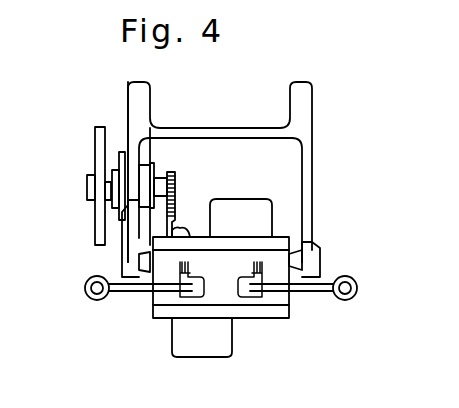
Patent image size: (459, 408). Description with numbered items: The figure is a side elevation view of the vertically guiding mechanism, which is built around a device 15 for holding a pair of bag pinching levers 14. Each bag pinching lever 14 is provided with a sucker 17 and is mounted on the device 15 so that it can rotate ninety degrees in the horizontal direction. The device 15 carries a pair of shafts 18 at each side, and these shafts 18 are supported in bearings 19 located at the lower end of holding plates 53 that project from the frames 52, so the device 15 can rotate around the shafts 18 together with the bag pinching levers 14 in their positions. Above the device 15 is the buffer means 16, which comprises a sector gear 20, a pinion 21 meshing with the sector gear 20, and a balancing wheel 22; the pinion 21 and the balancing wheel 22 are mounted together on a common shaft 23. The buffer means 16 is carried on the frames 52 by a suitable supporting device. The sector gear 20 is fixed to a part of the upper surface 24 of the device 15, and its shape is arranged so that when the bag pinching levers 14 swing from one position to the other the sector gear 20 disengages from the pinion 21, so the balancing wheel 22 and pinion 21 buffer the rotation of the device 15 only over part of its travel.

The bag pinching lever 14 is at (134, 296).
The device for holding the bag pinching levers 15 is at (232, 305).
The buffer means 16 is at (114, 138).
The sucker 17 is at (89, 300).
The shaft 18 is at (120, 252).
The bearing 19 is at (118, 266).
The sector gear 20 is at (184, 232).
The pinion 21 is at (176, 175).
The balancing wheel 22 is at (91, 205).
The shaft 23 is at (107, 186).
The upper surface 24 is at (211, 222).
The frame 52 is at (98, 142).
The holding plate 53 is at (308, 228).